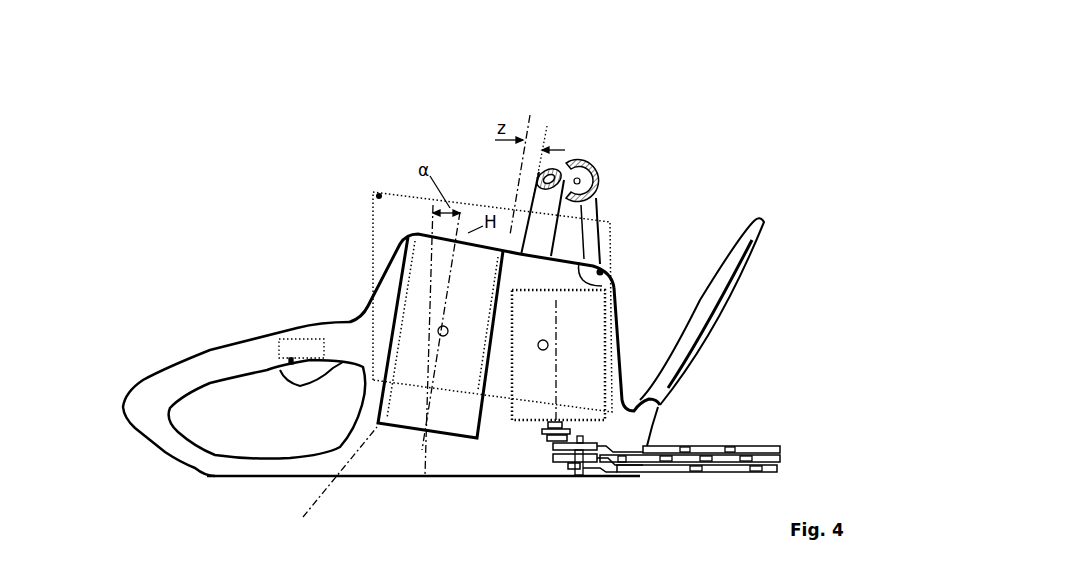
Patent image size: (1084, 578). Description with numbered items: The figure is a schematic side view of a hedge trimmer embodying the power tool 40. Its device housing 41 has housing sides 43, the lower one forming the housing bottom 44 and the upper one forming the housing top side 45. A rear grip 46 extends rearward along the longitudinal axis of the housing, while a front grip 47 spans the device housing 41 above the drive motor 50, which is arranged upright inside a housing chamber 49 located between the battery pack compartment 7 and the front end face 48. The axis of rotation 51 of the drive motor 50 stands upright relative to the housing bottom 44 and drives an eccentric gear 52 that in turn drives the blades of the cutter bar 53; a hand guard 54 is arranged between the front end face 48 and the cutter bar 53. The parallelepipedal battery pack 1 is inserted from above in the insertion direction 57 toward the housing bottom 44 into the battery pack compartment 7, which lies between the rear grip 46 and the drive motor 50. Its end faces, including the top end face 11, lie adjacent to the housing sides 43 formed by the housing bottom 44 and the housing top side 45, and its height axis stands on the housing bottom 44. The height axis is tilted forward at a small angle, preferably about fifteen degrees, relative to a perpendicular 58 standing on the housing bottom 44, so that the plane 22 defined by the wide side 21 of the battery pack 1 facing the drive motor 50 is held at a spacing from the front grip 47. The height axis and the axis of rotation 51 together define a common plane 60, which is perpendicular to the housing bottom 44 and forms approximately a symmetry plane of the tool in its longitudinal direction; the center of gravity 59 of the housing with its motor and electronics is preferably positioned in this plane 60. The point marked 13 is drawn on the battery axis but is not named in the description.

The battery pack 1 is at (335, 483).
The battery pack compartment 7 is at (400, 293).
The top end face 11 is at (428, 233).
The battery axis point 13 is at (438, 332).
The wide side 21 is at (476, 418).
The plane 22 is at (531, 117).
The power tool 40 is at (303, 155).
The device housing 41 is at (358, 310).
The housing sides 43 is at (595, 263).
The housing bottom 44 is at (408, 468).
The housing top side 45 is at (607, 279).
The rear grip 46 is at (208, 465).
The front grip 47 is at (598, 168).
The front end face 48 is at (620, 338).
The housing chamber 49 is at (603, 268).
The drive motor 50 is at (556, 390).
The axis of rotation 51 is at (552, 392).
The eccentric gear 52 is at (585, 472).
The cutter bar 53 is at (730, 452).
The hand guard 54 is at (762, 224).
The insertion direction 57 is at (480, 156).
The perpendicular 58 is at (432, 222).
The center of gravity 59 is at (548, 348).
The common plane 60 is at (375, 190).